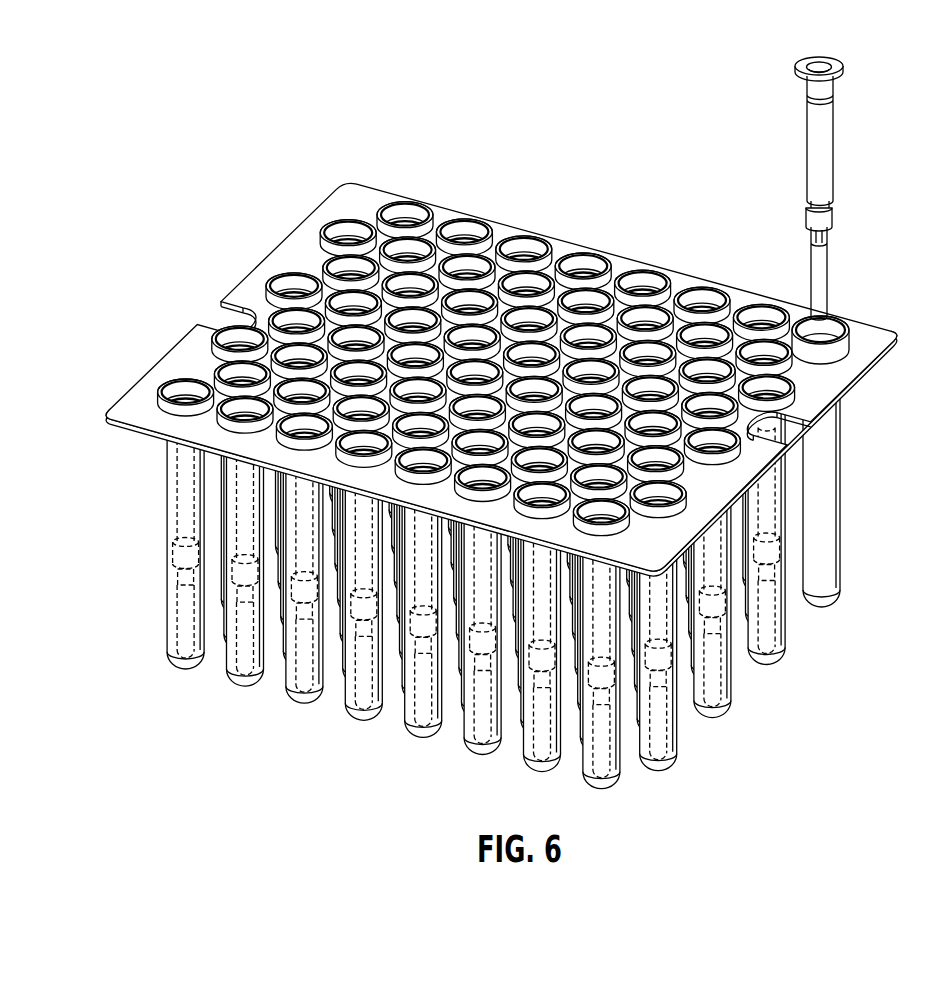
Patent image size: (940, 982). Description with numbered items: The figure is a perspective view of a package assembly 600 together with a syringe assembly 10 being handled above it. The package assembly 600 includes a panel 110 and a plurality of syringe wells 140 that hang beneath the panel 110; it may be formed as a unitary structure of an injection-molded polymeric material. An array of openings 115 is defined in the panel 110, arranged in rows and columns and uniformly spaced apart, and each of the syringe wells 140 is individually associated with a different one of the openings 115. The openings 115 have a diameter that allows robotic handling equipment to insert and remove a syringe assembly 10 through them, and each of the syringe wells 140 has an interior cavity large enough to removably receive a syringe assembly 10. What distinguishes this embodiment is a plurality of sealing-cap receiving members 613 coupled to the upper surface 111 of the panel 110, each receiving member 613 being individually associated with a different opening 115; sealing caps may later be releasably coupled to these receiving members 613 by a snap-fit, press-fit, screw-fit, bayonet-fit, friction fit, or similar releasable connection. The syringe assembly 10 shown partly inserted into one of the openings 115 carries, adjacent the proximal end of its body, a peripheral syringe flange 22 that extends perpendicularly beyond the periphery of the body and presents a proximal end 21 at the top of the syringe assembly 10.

The package assembly 600 is at (492, 405).
The panel 110 is at (472, 379).
The upper surface 111 is at (130, 412).
The syringe assembly 10 is at (512, 293).
The proximal end 21 is at (803, 62).
The syringe flange 22 is at (799, 78).
The openings 115 is at (824, 340).
The sealing-cap receiving members 613 is at (792, 407).
The syringe wells 140 is at (852, 465).